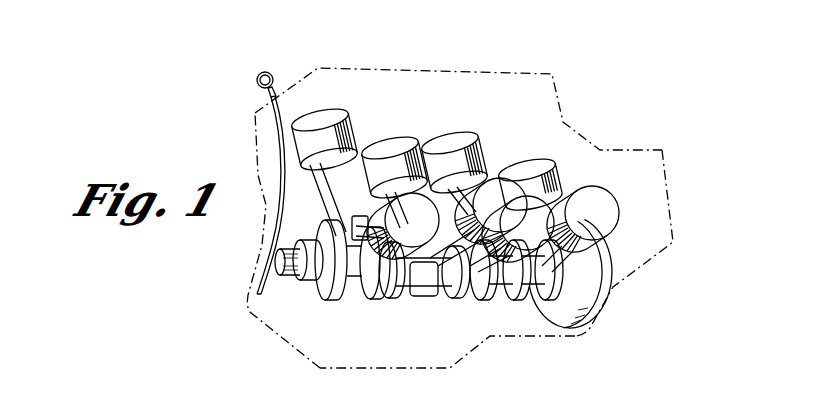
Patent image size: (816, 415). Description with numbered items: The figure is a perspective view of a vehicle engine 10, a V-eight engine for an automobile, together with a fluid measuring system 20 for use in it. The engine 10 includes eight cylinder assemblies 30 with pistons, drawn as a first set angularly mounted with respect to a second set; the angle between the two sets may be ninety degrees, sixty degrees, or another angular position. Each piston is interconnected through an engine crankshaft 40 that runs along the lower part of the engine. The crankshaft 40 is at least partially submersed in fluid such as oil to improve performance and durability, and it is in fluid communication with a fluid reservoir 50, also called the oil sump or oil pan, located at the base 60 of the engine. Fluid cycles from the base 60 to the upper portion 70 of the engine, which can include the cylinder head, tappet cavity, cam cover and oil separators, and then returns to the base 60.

The vehicle engine 10 is at (502, 50).
The fluid measuring system 20 is at (272, 75).
The cylinder assemblies 30 is at (602, 204).
The engine crankshaft 40 is at (300, 264).
The fluid reservoir 50 is at (248, 312).
The base of the engine 60 is at (356, 380).
The upper portion of the engine 70 is at (680, 163).